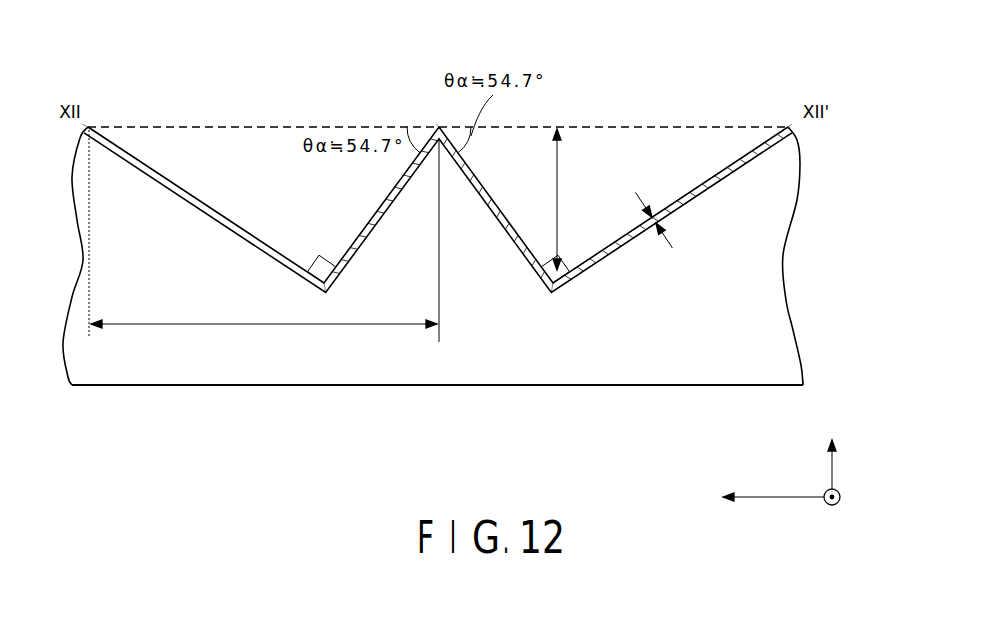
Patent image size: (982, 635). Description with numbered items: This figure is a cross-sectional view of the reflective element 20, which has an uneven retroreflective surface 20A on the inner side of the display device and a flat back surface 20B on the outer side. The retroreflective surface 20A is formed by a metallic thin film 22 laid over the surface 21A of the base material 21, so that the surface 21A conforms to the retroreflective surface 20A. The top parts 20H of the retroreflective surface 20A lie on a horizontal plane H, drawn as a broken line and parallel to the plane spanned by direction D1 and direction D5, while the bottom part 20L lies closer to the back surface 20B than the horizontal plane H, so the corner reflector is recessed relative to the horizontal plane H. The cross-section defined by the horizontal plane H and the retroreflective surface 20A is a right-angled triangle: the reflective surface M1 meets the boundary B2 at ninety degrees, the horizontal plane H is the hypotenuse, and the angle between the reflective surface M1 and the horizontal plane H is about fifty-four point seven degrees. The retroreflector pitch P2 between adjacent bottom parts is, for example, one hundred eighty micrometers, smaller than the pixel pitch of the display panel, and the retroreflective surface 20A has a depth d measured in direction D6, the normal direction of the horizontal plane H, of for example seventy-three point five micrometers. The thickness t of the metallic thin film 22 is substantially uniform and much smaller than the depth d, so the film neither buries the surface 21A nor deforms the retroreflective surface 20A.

The reflective element 20 is at (816, 244).
The retroreflective surface 20A is at (729, 159).
The back surface 20B is at (612, 387).
The top parts 20H is at (92, 125).
The bottom part 20L is at (327, 291).
The base material 21 is at (782, 342).
The surface of the base material 21A is at (682, 186).
The metallic thin film 22 is at (770, 146).
The boundary B2 is at (226, 205).
The reflective surface M1 is at (362, 228).
The horizontal plane H is at (237, 122).
The retroreflector pitch P2 is at (264, 336).
The depth d is at (563, 199).
The thickness t is at (647, 232).
The direction D1 is at (845, 508).
The direction D5 is at (756, 497).
The direction D6 is at (832, 452).